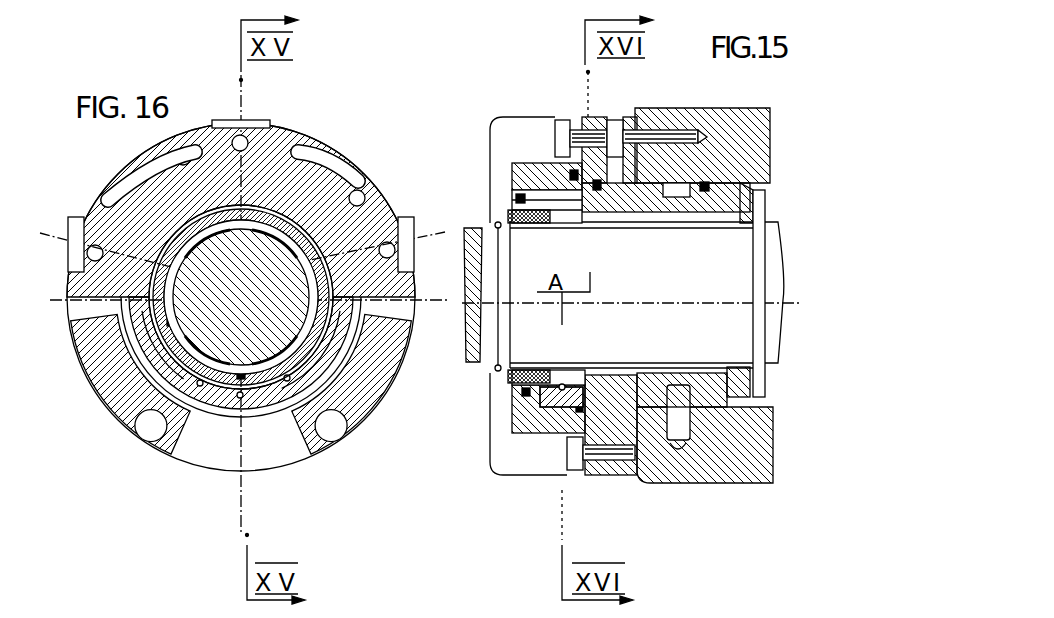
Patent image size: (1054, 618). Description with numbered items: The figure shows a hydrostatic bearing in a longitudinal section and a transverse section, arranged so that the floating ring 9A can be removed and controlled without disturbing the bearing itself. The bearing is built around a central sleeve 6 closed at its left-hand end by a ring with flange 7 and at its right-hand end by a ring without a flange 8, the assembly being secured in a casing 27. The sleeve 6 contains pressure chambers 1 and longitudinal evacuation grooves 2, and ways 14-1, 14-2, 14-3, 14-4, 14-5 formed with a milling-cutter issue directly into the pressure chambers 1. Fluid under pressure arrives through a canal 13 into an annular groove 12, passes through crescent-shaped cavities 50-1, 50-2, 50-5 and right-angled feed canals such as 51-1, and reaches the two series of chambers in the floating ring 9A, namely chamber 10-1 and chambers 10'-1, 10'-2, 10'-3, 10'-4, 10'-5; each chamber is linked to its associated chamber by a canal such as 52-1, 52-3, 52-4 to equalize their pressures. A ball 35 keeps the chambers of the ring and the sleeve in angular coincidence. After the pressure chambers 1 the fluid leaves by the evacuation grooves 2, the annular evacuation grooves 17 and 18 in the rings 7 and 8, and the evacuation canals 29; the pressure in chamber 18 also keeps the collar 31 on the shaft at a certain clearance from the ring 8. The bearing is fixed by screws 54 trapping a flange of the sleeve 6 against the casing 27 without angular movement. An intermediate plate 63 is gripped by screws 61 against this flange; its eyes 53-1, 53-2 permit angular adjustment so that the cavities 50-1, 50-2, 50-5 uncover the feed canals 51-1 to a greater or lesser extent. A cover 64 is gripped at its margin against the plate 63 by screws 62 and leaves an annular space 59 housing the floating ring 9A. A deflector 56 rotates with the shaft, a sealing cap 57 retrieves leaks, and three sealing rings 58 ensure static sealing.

In FIG. 16, the pressure chambers 1 is at (241, 297).
In FIG. 15, the pressure chambers 1 is at (703, 215).
In FIG. 16, the evacuation grooves 2 is at (241, 297).
In FIG. 15, the evacuation grooves 2 is at (668, 374).
In FIG. 16, the central sleeve 6 is at (278, 236).
In FIG. 15, the central sleeve 6 is at (627, 384).
In FIG. 15, the ring with flange 7 is at (500, 366).
In FIG. 15, the ring without flange 8 is at (745, 186).
In FIG. 16, the floating ring 9A is at (232, 402).
In FIG. 15, the floating ring 9A is at (535, 185).
In FIG. 15, the annular groove 12 is at (675, 183).
In FIG. 15, the canal 13 is at (703, 440).
In FIG. 15, the annular evacuation groove 17 is at (533, 370).
In FIG. 15, the annular evacuation groove 18 is at (752, 214).
In FIG. 15, the casing 27 is at (744, 118).
In FIG. 15, the evacuation canals 29 is at (729, 374).
In FIG. 15, the collar 31 is at (763, 316).
In FIG. 16, the ball 35 is at (160, 371).
In FIG. 15, the ball 35 is at (563, 384).
In FIG. 15, the screws 54 is at (617, 125).
In FIG. 15, the deflector 56 is at (528, 396).
In FIG. 15, the sealing cap 57 is at (492, 457).
In FIG. 15, the sealing rings 58 is at (571, 171).
In FIG. 16, the annular space 59 is at (250, 400).
In FIG. 15, the annular space 59 is at (540, 388).
In FIG. 15, the screws 61 is at (578, 458).
In FIG. 15, the screws 62 is at (564, 128).
In FIG. 16, the intermediate plate 63 is at (293, 132).
In FIG. 15, the intermediate plate 63 is at (597, 462).
In FIG. 15, the cover 64 is at (530, 421).
In FIG. 15, the chamber 10-1 is at (573, 222).
In FIG. 15, the chamber 10'-1 is at (482, 192).
In FIG. 16, the chamber 10'-2 is at (91, 327).
In FIG. 16, the chamber 10'-3 is at (126, 413).
In FIG. 16, the chamber 10'-4 is at (384, 427).
In FIG. 16, the chamber 10'-5 is at (437, 280).
In FIG. 15, the way 14-1 is at (556, 224).
In FIG. 16, the way 14-2 is at (165, 356).
In FIG. 16, the way 14-3 is at (224, 398).
In FIG. 16, the way 14-4 is at (312, 352).
In FIG. 16, the way 14-5 is at (342, 323).
In FIG. 16, the crescent-shaped cavity 50-1 is at (203, 213).
In FIG. 16, the crescent-shaped cavity 50-2 is at (150, 300).
In FIG. 16, the crescent-shaped cavity 50-5 is at (314, 234).
In FIG. 15, the right-angled canal 51-1 is at (653, 215).
In FIG. 15, the canal 52-1 is at (535, 229).
In FIG. 16, the canal 52-3 is at (165, 390).
In FIG. 16, the canal 52-4 is at (270, 400).
In FIG. 16, the eye 53-1 is at (330, 165).
In FIG. 16, the eye 53-2 is at (145, 172).